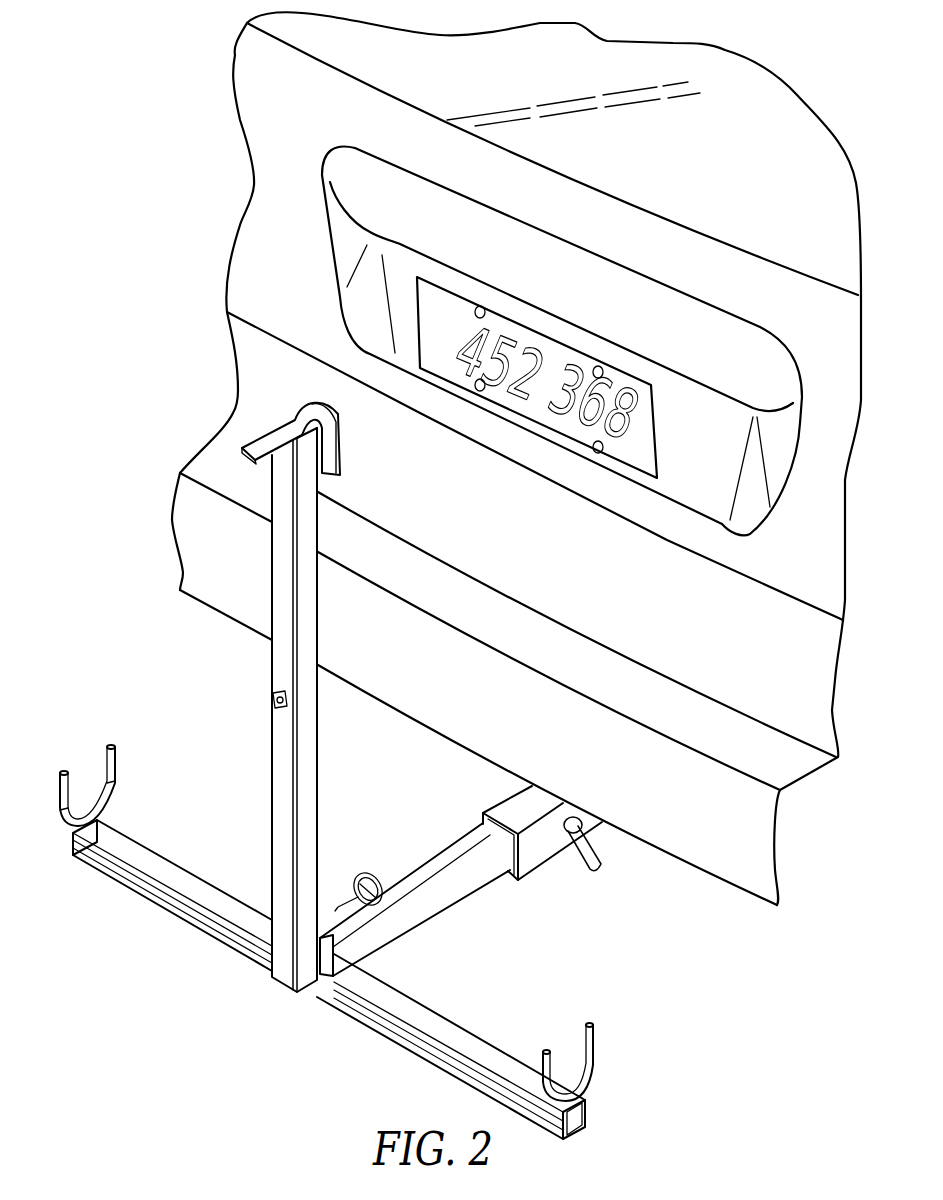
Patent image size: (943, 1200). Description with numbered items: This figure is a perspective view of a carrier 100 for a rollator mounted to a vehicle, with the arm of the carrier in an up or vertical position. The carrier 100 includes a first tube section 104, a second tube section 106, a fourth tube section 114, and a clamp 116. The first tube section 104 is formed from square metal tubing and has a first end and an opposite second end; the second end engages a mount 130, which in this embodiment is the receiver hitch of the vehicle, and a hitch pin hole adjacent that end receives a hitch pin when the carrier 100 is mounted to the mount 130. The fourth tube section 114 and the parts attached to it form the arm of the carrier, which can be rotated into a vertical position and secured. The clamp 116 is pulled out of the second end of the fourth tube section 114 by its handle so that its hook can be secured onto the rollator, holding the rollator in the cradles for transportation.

The carrier 100 is at (112, 612).
The first tube section 104 is at (418, 922).
The second tube section 106 is at (152, 900).
The fourth tube section 114 is at (270, 667).
The clamp 116 is at (256, 442).
The mount 130 is at (535, 878).